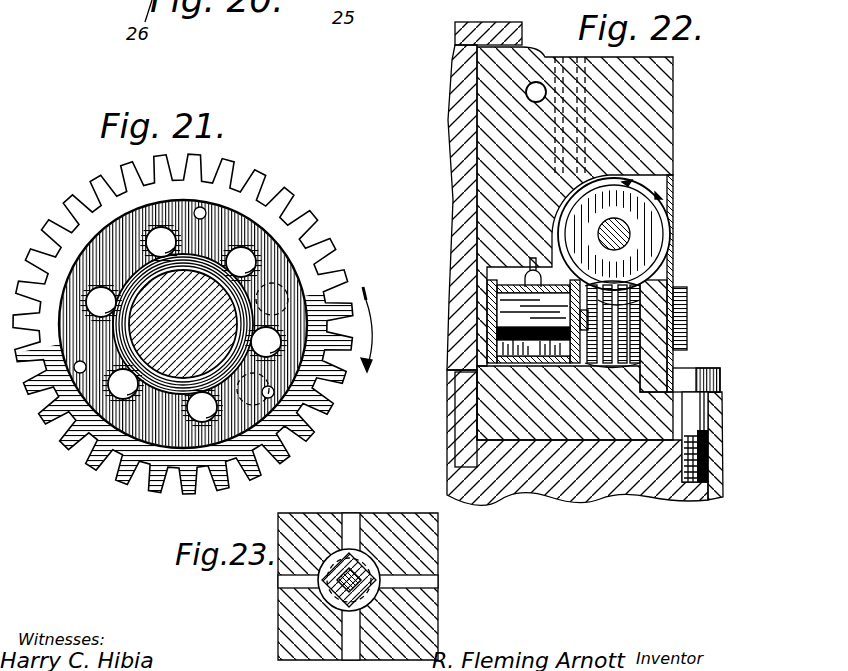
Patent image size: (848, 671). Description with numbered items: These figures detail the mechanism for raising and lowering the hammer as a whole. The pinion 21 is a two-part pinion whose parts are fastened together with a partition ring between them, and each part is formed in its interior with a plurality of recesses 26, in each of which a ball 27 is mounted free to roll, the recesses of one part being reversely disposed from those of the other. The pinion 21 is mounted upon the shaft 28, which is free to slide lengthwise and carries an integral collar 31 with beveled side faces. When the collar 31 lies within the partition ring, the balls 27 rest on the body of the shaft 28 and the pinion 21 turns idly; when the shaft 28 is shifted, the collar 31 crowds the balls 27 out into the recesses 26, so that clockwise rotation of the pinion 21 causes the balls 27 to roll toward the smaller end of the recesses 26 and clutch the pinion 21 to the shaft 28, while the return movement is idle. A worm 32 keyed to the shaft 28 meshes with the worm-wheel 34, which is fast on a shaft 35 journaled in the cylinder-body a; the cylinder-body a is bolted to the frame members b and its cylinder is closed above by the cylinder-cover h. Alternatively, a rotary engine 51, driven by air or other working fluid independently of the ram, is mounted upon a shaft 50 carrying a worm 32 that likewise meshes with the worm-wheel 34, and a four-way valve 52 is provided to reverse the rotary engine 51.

In FIG. 21, the pinion 21 is at (110, 402).
In FIG. 21, the recesses 26 is at (288, 428).
In FIG. 21, the ball 27 is at (246, 260).
In FIG. 21, the shaft 28 is at (161, 305).
In FIG. 21, the collar 31 is at (227, 390).
In FIG. 22, the worm 32 is at (612, 327).
In FIG. 22, the worm-wheel 34 is at (653, 252).
In FIG. 22, the shaft 35 is at (621, 234).
In FIG. 22, the shaft 50 is at (600, 302).
In FIG. 22, the rotary engine 51 is at (487, 335).
In FIG. 23, the four-way valve 52 is at (372, 577).
In FIG. 22, the cylinder-body a is at (658, 124).
In FIG. 22, the frame members b is at (714, 483).
In FIG. 22, the cylinder-cover h is at (512, 33).